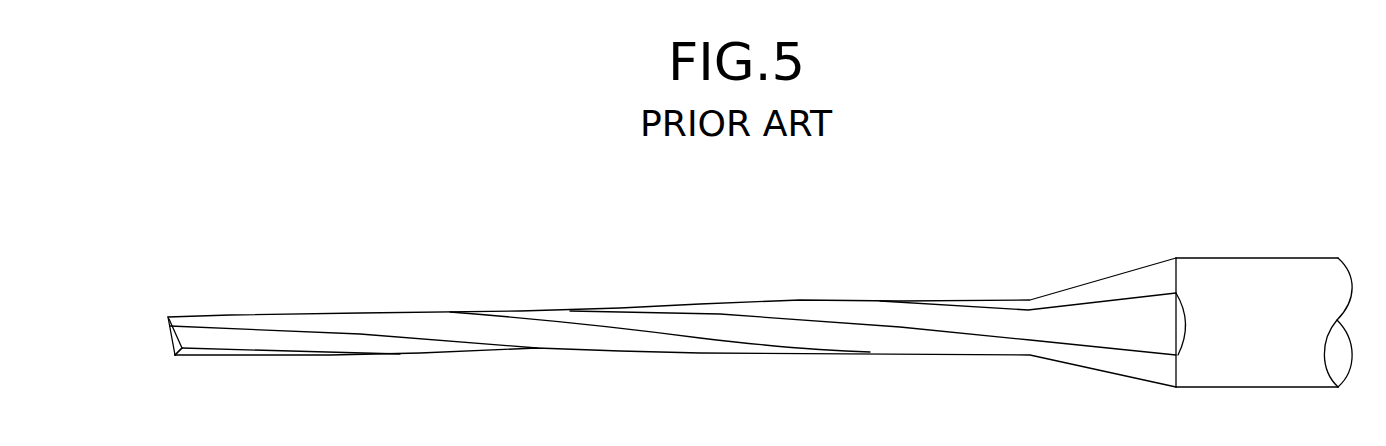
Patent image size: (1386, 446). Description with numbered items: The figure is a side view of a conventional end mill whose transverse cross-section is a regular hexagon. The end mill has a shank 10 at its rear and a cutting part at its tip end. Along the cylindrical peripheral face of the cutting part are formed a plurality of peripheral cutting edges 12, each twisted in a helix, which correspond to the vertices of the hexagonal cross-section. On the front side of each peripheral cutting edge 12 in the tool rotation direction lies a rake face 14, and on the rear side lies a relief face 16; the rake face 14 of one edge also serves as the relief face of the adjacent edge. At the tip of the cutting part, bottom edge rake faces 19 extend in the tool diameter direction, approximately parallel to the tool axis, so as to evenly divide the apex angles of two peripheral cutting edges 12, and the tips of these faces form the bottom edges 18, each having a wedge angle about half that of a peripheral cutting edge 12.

The shank 10 is at (1245, 262).
The peripheral cutting edge 12 is at (585, 326).
The rake face 14 is at (662, 318).
The relief face 16 is at (537, 346).
The bottom edge 18 is at (172, 348).
The bottom edge rake face 19 is at (177, 357).